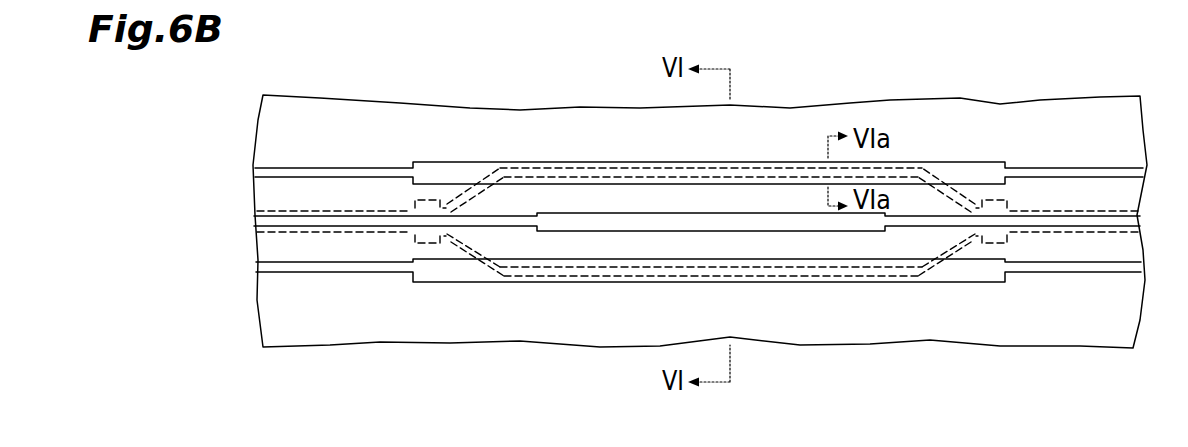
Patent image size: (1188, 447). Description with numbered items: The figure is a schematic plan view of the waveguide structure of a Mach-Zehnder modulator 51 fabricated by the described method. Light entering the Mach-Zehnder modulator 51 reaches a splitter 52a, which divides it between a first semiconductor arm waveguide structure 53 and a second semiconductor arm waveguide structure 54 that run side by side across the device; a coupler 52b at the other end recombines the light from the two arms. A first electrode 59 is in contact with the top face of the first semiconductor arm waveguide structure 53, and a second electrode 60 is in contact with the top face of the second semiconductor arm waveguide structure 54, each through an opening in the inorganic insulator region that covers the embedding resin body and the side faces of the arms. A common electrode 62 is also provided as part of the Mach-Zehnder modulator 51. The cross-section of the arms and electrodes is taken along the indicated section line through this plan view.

The Mach-Zehnder modulator 51 is at (893, 78).
The splitter 52a is at (430, 196).
The coupler 52b is at (984, 196).
The first semiconductor arm waveguide structure 53 is at (451, 200).
The second semiconductor arm waveguide structure 54 is at (489, 242).
The first electrode 59 is at (982, 238).
The second electrode 60 is at (992, 258).
The common electrode 62 is at (1095, 232).